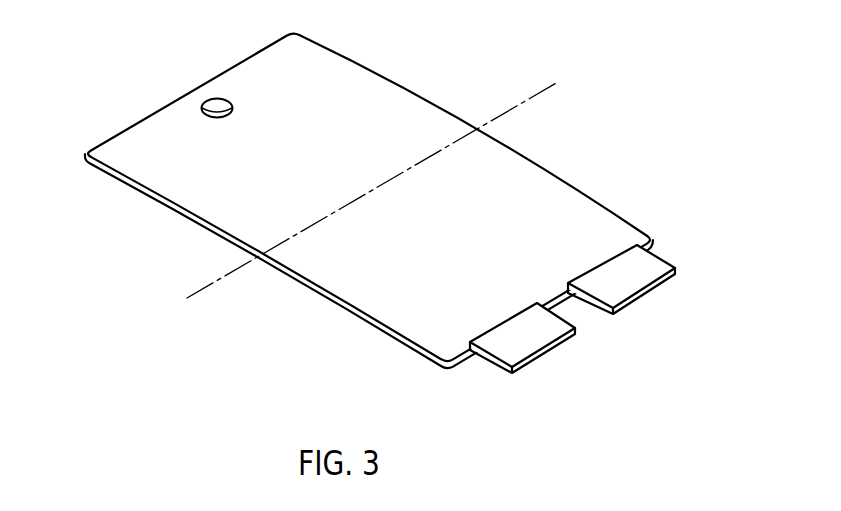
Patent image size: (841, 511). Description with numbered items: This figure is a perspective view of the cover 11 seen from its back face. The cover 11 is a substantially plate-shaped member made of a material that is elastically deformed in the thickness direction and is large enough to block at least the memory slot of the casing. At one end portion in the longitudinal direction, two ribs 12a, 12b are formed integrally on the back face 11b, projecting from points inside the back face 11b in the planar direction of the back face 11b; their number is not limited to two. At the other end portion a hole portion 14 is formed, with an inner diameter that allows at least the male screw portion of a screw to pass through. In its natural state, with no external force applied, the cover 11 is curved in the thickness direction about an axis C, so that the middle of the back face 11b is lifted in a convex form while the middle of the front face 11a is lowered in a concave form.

The cover 11 is at (369, 201).
The front face 11a is at (187, 217).
The back face 11b is at (405, 146).
The rib 12a is at (657, 272).
The rib 12b is at (520, 342).
The hole portion 14 is at (215, 100).
The axis C is at (204, 292).